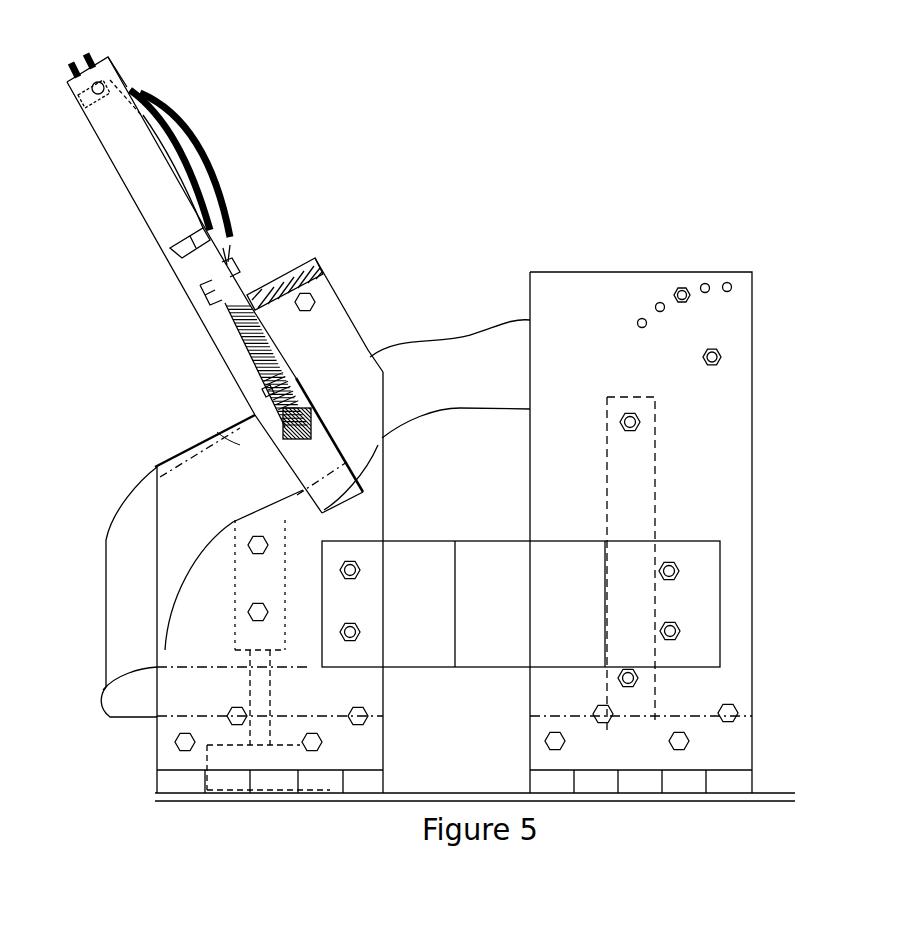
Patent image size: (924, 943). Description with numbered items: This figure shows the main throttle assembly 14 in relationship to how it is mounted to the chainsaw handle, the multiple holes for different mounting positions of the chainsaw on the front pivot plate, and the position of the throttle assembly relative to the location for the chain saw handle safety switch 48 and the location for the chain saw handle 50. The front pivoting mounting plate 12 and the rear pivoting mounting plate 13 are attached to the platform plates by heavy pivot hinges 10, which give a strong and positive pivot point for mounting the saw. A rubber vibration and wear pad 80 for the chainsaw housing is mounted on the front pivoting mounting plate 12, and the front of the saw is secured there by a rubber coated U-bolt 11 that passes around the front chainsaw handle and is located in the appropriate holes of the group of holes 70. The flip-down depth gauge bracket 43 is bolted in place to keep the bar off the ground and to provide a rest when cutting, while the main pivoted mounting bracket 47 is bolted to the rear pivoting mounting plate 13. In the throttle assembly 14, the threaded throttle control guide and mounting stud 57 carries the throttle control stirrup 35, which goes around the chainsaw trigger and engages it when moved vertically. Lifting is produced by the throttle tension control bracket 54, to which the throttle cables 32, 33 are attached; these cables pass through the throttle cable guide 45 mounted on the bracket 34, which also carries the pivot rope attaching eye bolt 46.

The pivot hinge 10 is at (157, 777).
The U-bolt 11 is at (682, 295).
The front pivoting mounting plate 12 is at (720, 400).
The rear pivoting mounting plate 13 is at (335, 318).
The throttle assembly 14 is at (255, 332).
The throttle cable 32 is at (177, 133).
The throttle cable 33 is at (193, 135).
The bracket 34 is at (153, 195).
The throttle control stirrup 35 is at (313, 467).
The depth gauge bracket 43 is at (690, 550).
The throttle cable guide 45 is at (127, 73).
The pivot rope attaching eye bolt 46 is at (173, 250).
The main pivoted mounting bracket 47 is at (260, 600).
The location for chain saw handle safety switch 48 is at (240, 415).
The location for chain saw handle 50 is at (122, 518).
The throttle tension control bracket 54 is at (225, 262).
The throttle control guide and mounting stud 57 is at (210, 277).
The group of holes 70 is at (738, 287).
The rubber vibration and wear pad 80 is at (640, 457).